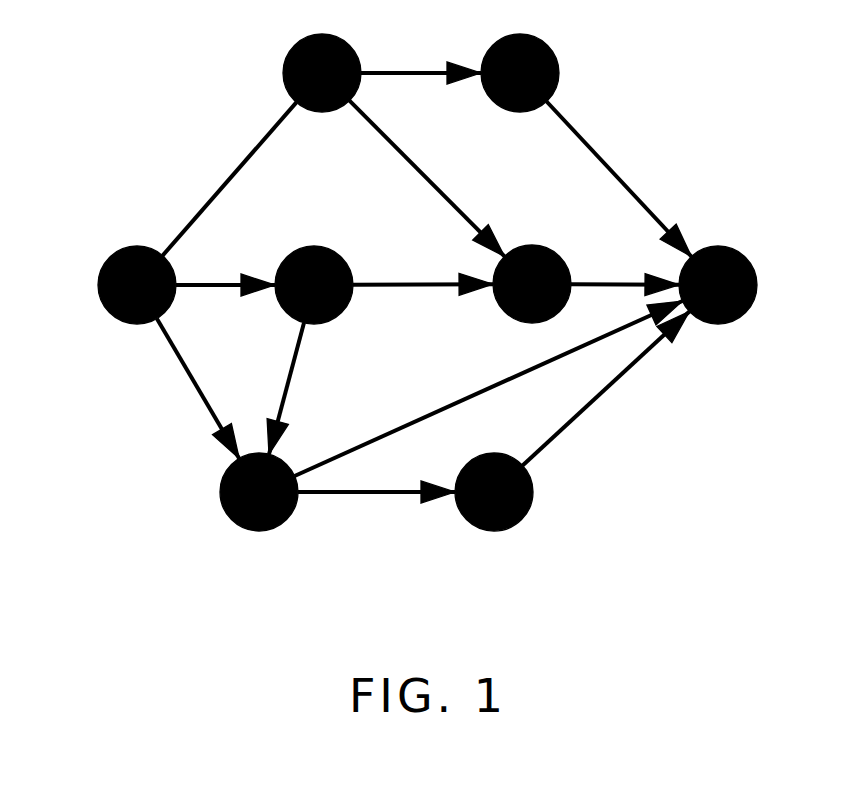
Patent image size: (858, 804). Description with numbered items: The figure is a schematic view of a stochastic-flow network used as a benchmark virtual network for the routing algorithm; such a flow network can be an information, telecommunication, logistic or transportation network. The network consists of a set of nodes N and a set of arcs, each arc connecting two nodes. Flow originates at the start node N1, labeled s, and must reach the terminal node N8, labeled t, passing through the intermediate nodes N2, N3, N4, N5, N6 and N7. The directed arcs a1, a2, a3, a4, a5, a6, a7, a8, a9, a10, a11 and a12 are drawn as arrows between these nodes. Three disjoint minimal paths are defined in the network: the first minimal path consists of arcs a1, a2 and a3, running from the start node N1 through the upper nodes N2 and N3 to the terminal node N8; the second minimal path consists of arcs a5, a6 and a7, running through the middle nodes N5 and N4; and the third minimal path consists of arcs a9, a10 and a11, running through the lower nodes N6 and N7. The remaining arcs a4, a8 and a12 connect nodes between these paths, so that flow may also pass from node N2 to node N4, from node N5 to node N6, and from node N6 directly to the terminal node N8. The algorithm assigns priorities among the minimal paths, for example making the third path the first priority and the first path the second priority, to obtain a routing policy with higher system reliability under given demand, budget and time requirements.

The start node N1 is at (98, 285).
The node N2 is at (322, 57).
The node N3 is at (520, 57).
The node N4 is at (532, 268).
The node N5 is at (314, 270).
The node N6 is at (259, 510).
The node N7 is at (494, 510).
The terminal node N8 is at (756, 285).
The arc a1 is at (230, 178).
The arc a2 is at (421, 56).
The arc a3 is at (619, 179).
The arc a4 is at (427, 179).
The arc a5 is at (225, 272).
The arc a6 is at (423, 270).
The arc a7 is at (625, 270).
The arc a8 is at (297, 389).
The arc a9 is at (194, 389).
The arc a10 is at (376, 507).
The arc a11 is at (606, 389).
The arc a12 is at (489, 388).